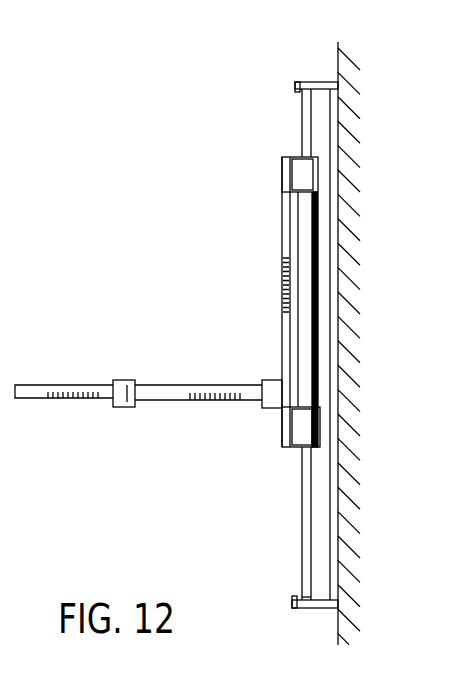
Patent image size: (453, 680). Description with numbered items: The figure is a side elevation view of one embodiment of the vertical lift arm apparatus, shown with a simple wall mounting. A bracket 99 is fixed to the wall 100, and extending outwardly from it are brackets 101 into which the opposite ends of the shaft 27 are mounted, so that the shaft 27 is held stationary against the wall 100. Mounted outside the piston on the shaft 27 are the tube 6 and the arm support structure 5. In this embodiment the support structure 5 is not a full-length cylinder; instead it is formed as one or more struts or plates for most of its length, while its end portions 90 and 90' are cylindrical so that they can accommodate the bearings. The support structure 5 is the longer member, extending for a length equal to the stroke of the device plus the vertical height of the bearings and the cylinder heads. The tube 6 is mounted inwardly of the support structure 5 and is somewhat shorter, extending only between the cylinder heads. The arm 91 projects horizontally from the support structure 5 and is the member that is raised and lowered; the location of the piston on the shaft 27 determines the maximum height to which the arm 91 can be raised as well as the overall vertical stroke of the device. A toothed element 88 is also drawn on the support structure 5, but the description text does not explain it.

The wall 100 is at (338, 66).
The brackets 101 is at (302, 82).
The bracket 99 is at (330, 124).
The shaft 27 is at (302, 472).
The end portion 90 is at (274, 168).
The end portion 90' is at (275, 430).
The tube 6 is at (302, 215).
The arm support structure 5 is at (283, 250).
The rack 88 is at (270, 287).
The arm 91 is at (148, 387).